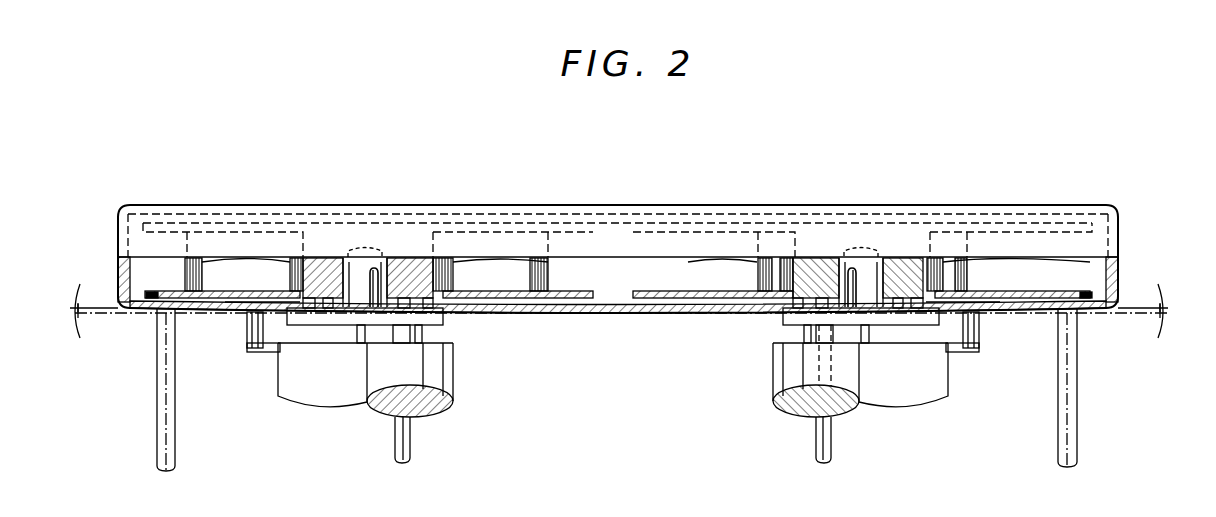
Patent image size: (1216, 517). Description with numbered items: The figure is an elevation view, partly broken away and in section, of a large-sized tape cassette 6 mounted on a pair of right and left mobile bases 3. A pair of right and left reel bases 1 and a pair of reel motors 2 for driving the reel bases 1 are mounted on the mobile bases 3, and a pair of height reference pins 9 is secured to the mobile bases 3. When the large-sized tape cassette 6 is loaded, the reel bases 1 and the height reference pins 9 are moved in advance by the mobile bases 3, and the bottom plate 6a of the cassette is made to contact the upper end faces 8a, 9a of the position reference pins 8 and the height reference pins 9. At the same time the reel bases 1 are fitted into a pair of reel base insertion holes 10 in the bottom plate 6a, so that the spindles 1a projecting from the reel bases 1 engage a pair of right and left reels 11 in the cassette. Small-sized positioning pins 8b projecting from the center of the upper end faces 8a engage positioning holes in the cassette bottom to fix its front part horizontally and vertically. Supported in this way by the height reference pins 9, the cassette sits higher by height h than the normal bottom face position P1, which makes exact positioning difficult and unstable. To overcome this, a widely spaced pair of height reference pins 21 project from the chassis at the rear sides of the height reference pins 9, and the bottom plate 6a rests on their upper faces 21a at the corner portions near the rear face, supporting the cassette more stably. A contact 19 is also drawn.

The reel base 1 is at (312, 318).
The spindle 1a is at (365, 250).
The reel motor 2 is at (325, 400).
The mobile base 3 is at (262, 340).
The large-sized tape cassette 6 is at (612, 207).
The bottom plate 6a is at (610, 318).
The position reference pin 8 is at (410, 445).
The upper end face 8a is at (432, 318).
The small-sized positioning pin 8b is at (406, 262).
The height reference pin 9 is at (250, 333).
The upper end face 9a is at (237, 311).
The reel base insertion hole 10 is at (280, 330).
The reel 11 is at (318, 262).
The contact 19 is at (186, 277).
The height reference pin 21 is at (162, 405).
The upper face 21a is at (150, 295).
The height h is at (1162, 306).
The normal bottom face position P1 is at (622, 311).